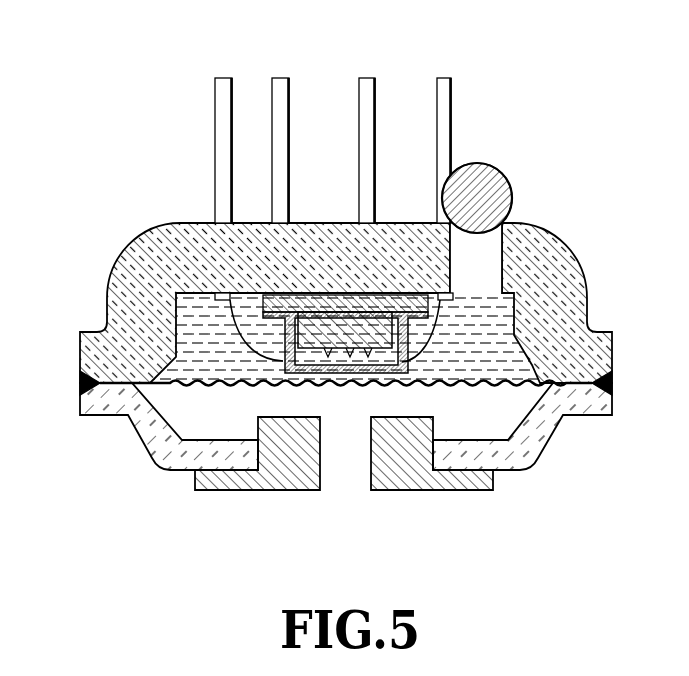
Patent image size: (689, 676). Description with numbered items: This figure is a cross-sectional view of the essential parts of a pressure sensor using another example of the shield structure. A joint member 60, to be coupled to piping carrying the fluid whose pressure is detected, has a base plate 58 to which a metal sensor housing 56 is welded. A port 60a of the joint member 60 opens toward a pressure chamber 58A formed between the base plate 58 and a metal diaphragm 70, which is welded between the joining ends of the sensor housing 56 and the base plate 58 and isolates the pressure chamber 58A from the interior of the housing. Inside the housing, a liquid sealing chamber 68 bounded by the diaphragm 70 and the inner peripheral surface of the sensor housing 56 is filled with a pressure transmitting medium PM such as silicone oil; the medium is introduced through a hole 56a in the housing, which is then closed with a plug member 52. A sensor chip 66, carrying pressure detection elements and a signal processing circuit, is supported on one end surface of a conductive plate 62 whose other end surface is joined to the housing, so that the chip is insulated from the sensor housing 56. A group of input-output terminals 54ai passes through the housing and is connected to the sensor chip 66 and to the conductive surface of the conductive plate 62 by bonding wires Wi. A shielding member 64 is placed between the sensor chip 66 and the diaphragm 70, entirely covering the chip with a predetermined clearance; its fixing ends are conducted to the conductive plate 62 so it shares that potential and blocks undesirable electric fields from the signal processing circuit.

The plug member 52 is at (482, 176).
The group of input-output terminals 54ai is at (284, 80).
The sensor housing 56 is at (578, 353).
The hole 56a is at (497, 257).
The base plate 58 is at (537, 435).
The pressure chamber 58A is at (180, 443).
The joint member 60 is at (433, 483).
The port 60a is at (320, 463).
The conductive plate 62 is at (300, 307).
The shielding member 64 is at (407, 372).
The sensor chip 66 is at (365, 327).
The liquid sealing chamber 68 is at (195, 357).
The diaphragm 70 is at (172, 385).
The bonding wires Wi is at (227, 328).
The pressure transmitting medium PM is at (606, 357).